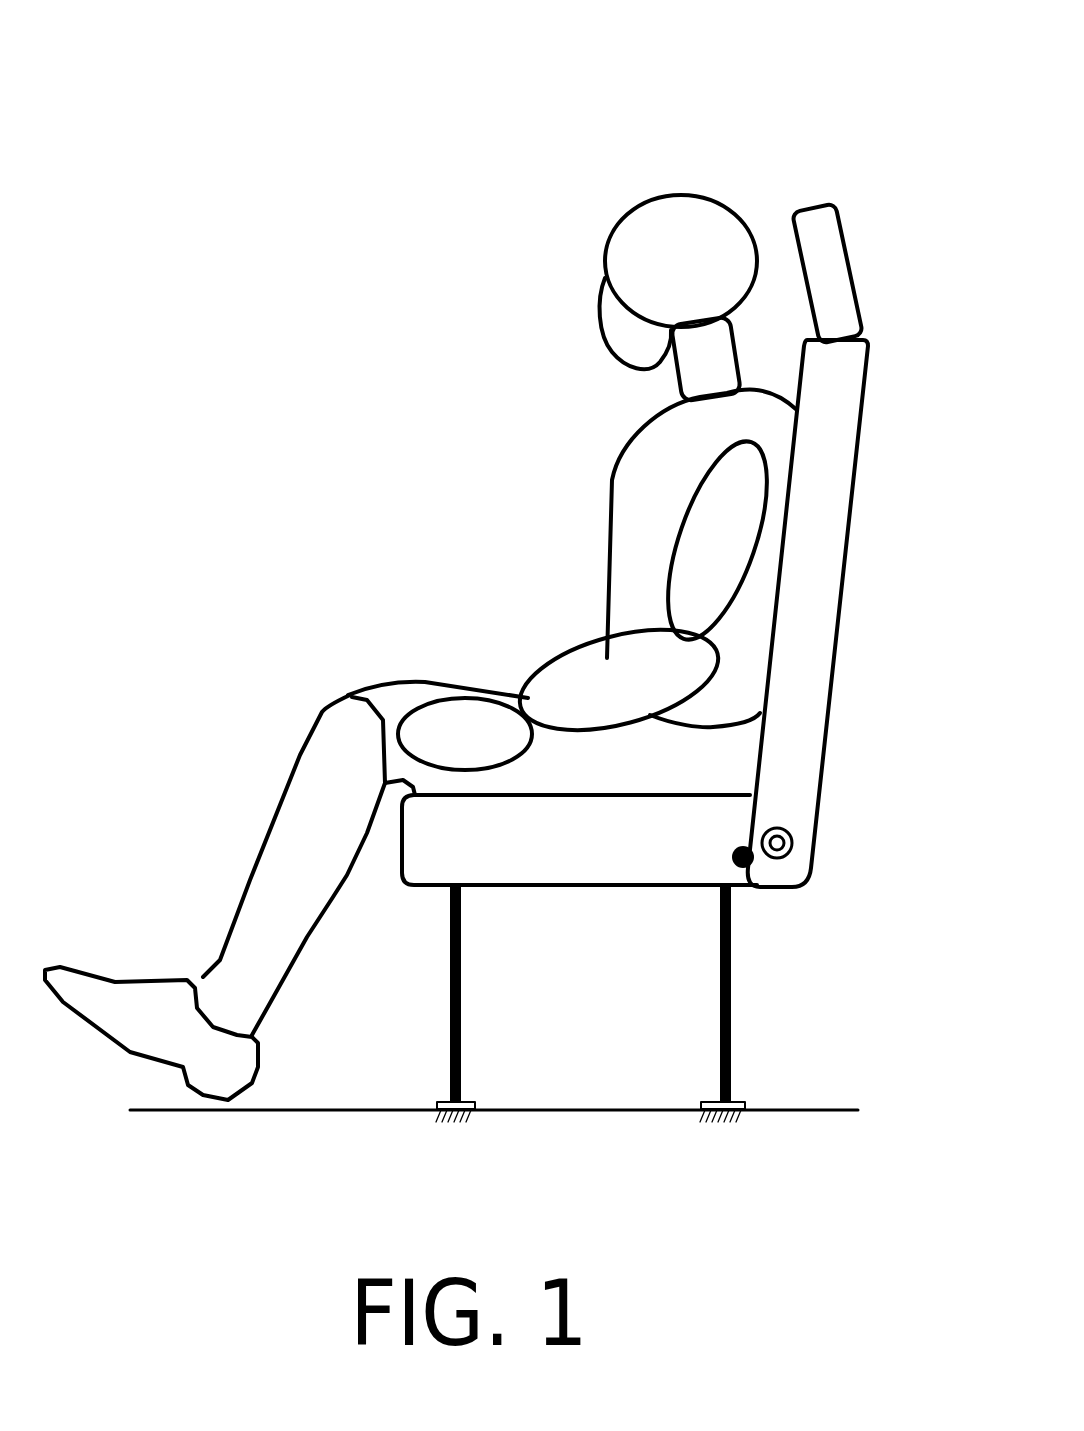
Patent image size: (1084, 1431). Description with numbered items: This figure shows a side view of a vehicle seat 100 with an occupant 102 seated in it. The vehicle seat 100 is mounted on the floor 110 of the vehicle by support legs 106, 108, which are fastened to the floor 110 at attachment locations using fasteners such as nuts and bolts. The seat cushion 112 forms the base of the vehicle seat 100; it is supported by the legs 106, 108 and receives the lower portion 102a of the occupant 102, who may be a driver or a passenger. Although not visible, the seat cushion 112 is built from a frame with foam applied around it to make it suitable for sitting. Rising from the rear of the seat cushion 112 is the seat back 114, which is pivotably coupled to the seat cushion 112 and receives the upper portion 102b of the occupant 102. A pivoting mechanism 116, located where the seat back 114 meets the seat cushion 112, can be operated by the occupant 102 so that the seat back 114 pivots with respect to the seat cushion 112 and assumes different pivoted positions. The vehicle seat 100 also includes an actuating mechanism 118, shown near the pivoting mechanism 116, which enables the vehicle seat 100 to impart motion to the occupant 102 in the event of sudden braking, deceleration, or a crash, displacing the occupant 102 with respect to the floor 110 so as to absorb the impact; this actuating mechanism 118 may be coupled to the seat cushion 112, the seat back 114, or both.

The vehicle seat 100 is at (626, 603).
The occupant 102 is at (421, 647).
The lower portion of the occupant 102a is at (357, 695).
The upper portion of the occupant 102b is at (635, 428).
The leg 106 is at (458, 1040).
The leg 108 is at (730, 1037).
The floor 110 is at (365, 1110).
The seat cushion 112 is at (472, 795).
The seat back 114 is at (856, 485).
The pivoting mechanism 116 is at (787, 852).
The actuating mechanism 118 is at (743, 868).